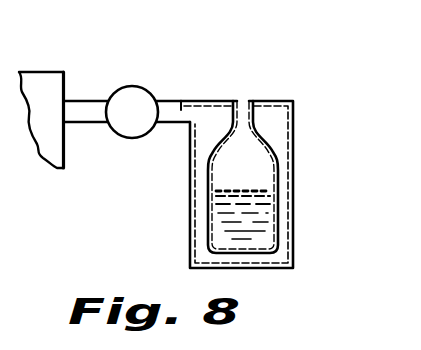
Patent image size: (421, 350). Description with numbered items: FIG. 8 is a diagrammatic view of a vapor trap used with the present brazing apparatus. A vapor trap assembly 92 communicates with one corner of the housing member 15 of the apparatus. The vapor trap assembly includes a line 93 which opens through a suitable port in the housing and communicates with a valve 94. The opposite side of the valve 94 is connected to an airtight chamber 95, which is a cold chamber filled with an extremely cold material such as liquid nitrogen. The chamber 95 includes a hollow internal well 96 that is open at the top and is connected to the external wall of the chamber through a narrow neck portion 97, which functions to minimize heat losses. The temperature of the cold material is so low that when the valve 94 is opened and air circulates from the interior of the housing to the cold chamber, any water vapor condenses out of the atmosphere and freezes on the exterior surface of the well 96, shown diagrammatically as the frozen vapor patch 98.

The housing member 15 is at (47, 84).
The vapor trap assembly 92 is at (232, 145).
The line 93 is at (89, 117).
The valve 94 is at (128, 100).
The airtight chamber 95 is at (192, 155).
The hollow internal well 96 is at (248, 163).
The narrow neck portion 97 is at (240, 117).
The frozen vapor patch 98 is at (210, 230).